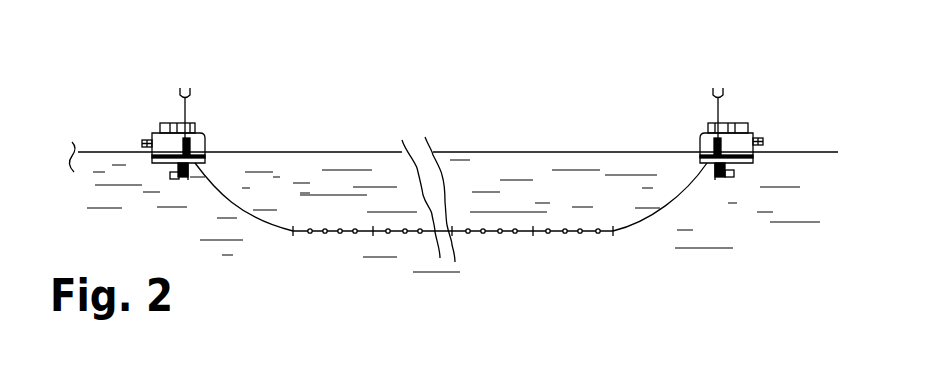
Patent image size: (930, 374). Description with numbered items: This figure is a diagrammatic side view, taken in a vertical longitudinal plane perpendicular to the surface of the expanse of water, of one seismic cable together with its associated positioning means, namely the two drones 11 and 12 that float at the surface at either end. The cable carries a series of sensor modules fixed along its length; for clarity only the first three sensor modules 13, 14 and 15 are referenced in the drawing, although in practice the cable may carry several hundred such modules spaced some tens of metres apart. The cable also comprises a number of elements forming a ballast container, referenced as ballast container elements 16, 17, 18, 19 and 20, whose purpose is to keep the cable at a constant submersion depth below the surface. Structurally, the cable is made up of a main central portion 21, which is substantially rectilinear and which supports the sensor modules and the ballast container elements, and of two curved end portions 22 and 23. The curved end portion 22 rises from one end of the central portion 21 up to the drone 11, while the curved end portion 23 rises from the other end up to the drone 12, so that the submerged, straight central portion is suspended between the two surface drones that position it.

The drone 11 is at (162, 122).
The drone 12 is at (748, 120).
The sensor module 13 is at (310, 236).
The sensor module 14 is at (325, 236).
The sensor module 15 is at (340, 236).
The ballast container element 16 is at (293, 235).
The ballast container element 17 is at (373, 236).
The ballast container element 18 is at (457, 240).
The ballast container element 19 is at (533, 236).
The ballast container element 20 is at (613, 236).
The main central portion 21 is at (413, 242).
The curved end portion 22 is at (224, 196).
The curved end portion 23 is at (660, 163).